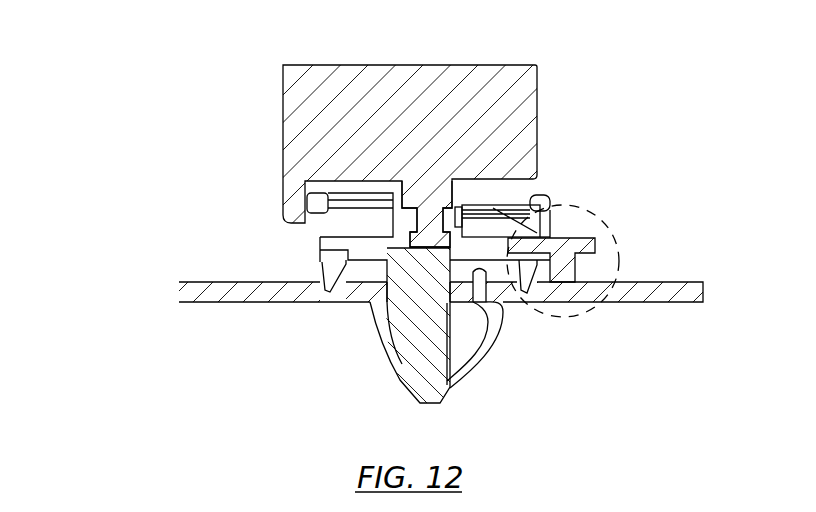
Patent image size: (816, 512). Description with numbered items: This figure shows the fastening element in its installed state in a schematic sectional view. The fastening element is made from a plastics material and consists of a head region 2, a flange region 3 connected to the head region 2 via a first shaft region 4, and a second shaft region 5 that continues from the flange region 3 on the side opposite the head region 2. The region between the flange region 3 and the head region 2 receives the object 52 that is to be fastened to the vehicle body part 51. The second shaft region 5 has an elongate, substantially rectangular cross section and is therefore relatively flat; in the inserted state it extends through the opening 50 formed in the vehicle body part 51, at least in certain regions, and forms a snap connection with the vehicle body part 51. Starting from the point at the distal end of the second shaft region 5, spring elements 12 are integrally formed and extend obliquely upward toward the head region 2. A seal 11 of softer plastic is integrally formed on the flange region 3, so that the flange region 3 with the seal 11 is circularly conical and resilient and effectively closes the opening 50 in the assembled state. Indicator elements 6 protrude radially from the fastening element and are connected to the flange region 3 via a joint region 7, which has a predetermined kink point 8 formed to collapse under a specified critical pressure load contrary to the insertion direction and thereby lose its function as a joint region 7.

The object 52 is at (343, 95).
The head region 2 is at (423, 193).
The first shaft region 4 is at (412, 222).
The flange region 3 is at (367, 251).
The seal 11 is at (327, 271).
The vehicle body part 51 is at (232, 297).
The opening 50 is at (380, 288).
The second shaft region 5 is at (418, 348).
The spring element 12 is at (457, 347).
The indicator element 6 is at (565, 275).
The joint region 7 is at (548, 238).
The predetermined kink point 8 is at (582, 238).